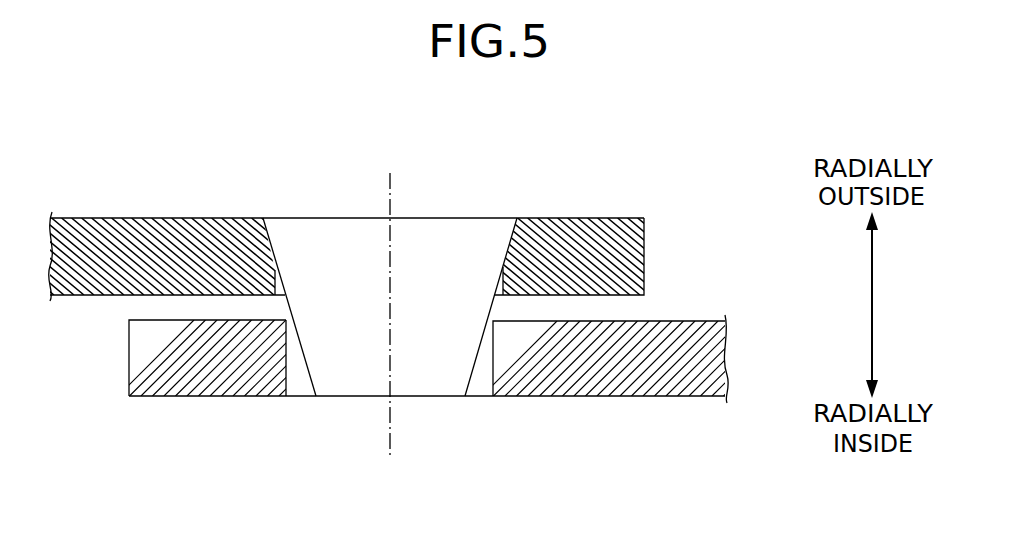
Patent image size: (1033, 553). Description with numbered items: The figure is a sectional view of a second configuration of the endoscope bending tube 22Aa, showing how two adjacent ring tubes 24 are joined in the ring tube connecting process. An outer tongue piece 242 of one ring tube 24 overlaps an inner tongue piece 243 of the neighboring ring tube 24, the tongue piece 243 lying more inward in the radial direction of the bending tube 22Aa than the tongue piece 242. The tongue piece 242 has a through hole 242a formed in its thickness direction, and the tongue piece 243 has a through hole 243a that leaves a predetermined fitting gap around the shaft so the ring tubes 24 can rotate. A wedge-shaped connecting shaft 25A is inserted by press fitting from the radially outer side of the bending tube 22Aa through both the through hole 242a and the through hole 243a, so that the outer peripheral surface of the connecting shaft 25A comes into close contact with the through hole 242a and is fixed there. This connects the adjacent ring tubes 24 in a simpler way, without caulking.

The bending tube 22Aa is at (88, 195).
The tongue piece 242 is at (612, 218).
The through hole 242a is at (276, 288).
The tongue piece 243 is at (178, 397).
The through hole 243a is at (286, 375).
The ring tube 24 is at (694, 300).
The wedge-shaped connecting shaft 25A is at (463, 197).